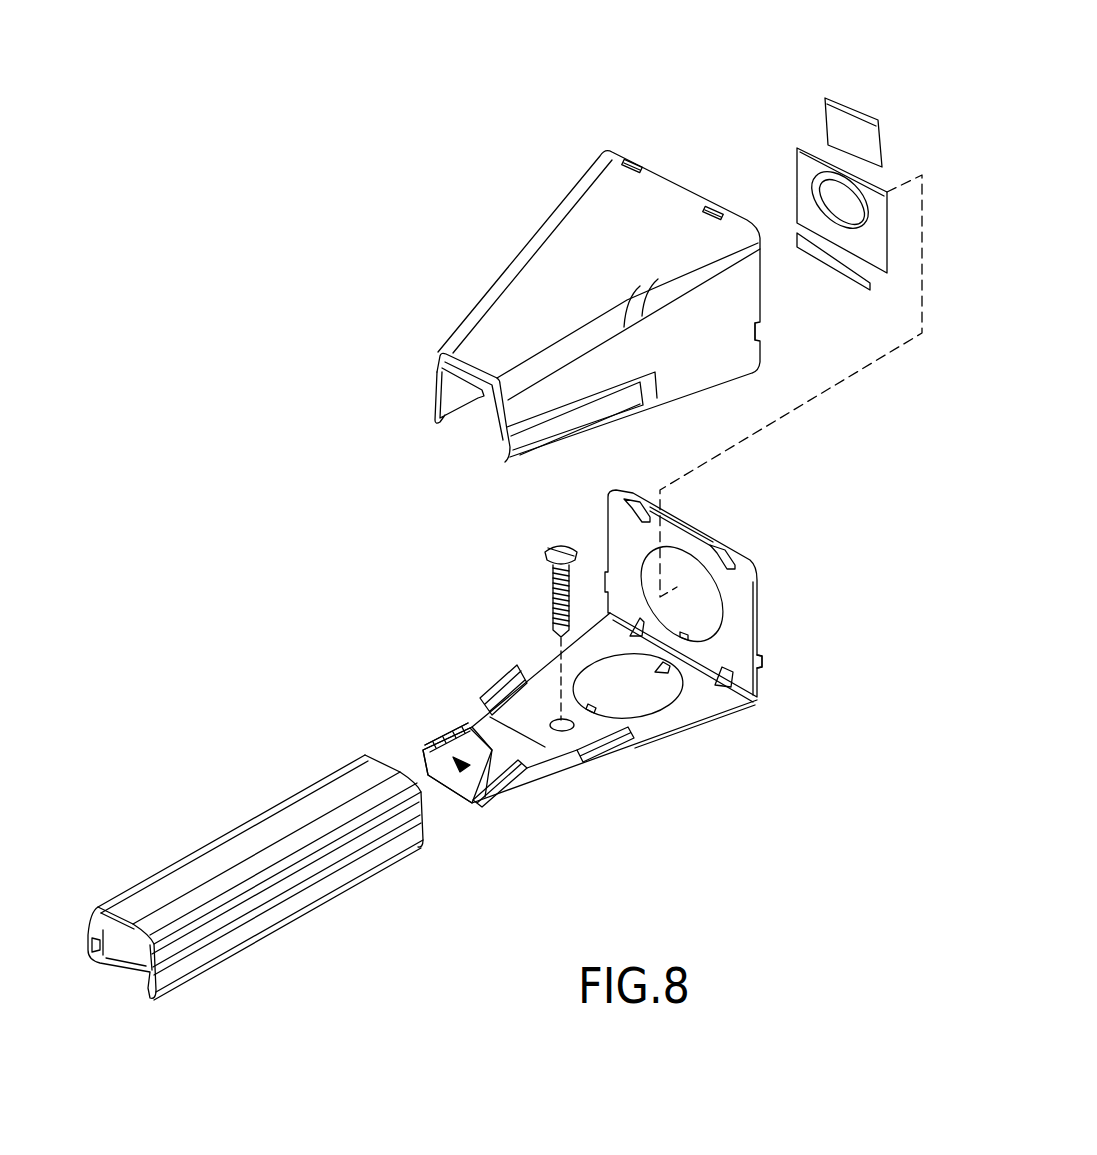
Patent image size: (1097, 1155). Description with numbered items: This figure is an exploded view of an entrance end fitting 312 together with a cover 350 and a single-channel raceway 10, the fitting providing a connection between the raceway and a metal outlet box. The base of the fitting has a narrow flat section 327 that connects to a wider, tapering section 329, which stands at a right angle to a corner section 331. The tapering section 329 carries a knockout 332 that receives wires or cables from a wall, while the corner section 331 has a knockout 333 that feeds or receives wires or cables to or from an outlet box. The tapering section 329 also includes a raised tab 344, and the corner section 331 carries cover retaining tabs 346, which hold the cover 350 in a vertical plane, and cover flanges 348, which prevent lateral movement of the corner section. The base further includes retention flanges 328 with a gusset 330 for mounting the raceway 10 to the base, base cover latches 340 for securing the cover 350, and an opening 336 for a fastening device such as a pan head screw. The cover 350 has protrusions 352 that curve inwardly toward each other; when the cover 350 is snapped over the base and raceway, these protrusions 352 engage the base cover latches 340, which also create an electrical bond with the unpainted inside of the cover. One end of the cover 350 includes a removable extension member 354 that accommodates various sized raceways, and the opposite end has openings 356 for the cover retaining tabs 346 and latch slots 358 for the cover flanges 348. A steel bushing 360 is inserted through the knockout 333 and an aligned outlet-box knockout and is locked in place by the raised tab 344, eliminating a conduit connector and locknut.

The single-channel raceway 10 is at (280, 777).
The entrance end fitting 312 is at (462, 250).
The narrow flat section 327 is at (461, 775).
The retention flanges 328 is at (497, 788).
The tapering section 329 is at (560, 768).
The gusset 330 is at (440, 758).
The corner section 331 is at (597, 695).
The knockout 332 is at (693, 703).
The knockout 333 is at (727, 615).
The opening 336 is at (556, 718).
The base cover latches 340 is at (502, 684).
The raised tab 344 is at (663, 663).
The cover retaining tabs 346 is at (763, 668).
The cover flanges 348 is at (725, 552).
The cover 350 is at (549, 305).
The protrusions 352 is at (530, 443).
The removable extension member 354 is at (437, 367).
The openings 356 is at (760, 332).
The latch slots 358 is at (634, 158).
The steel bushing 360 is at (822, 126).